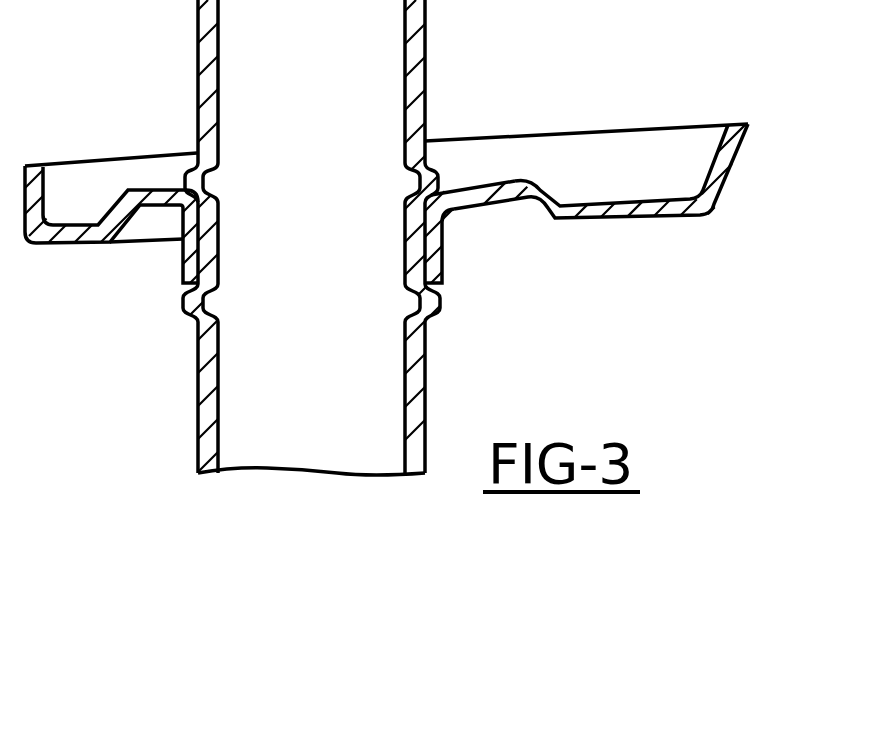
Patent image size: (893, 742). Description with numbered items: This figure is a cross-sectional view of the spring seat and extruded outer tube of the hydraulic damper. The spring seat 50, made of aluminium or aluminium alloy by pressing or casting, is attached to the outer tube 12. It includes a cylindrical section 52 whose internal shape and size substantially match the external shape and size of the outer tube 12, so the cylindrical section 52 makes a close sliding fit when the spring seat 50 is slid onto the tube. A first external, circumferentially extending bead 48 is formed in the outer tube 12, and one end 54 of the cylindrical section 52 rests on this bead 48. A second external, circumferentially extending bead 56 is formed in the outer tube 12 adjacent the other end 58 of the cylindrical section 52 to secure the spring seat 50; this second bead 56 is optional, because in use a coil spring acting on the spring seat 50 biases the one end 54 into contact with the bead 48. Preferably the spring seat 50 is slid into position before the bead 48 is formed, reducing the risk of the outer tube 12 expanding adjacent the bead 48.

The outer tube 12 is at (425, 63).
The first bead 48 is at (438, 306).
The spring seat 50 is at (748, 150).
The cylindrical section 52 is at (443, 262).
The one end 54 is at (186, 288).
The second bead 56 is at (431, 193).
The other end 58 is at (406, 195).